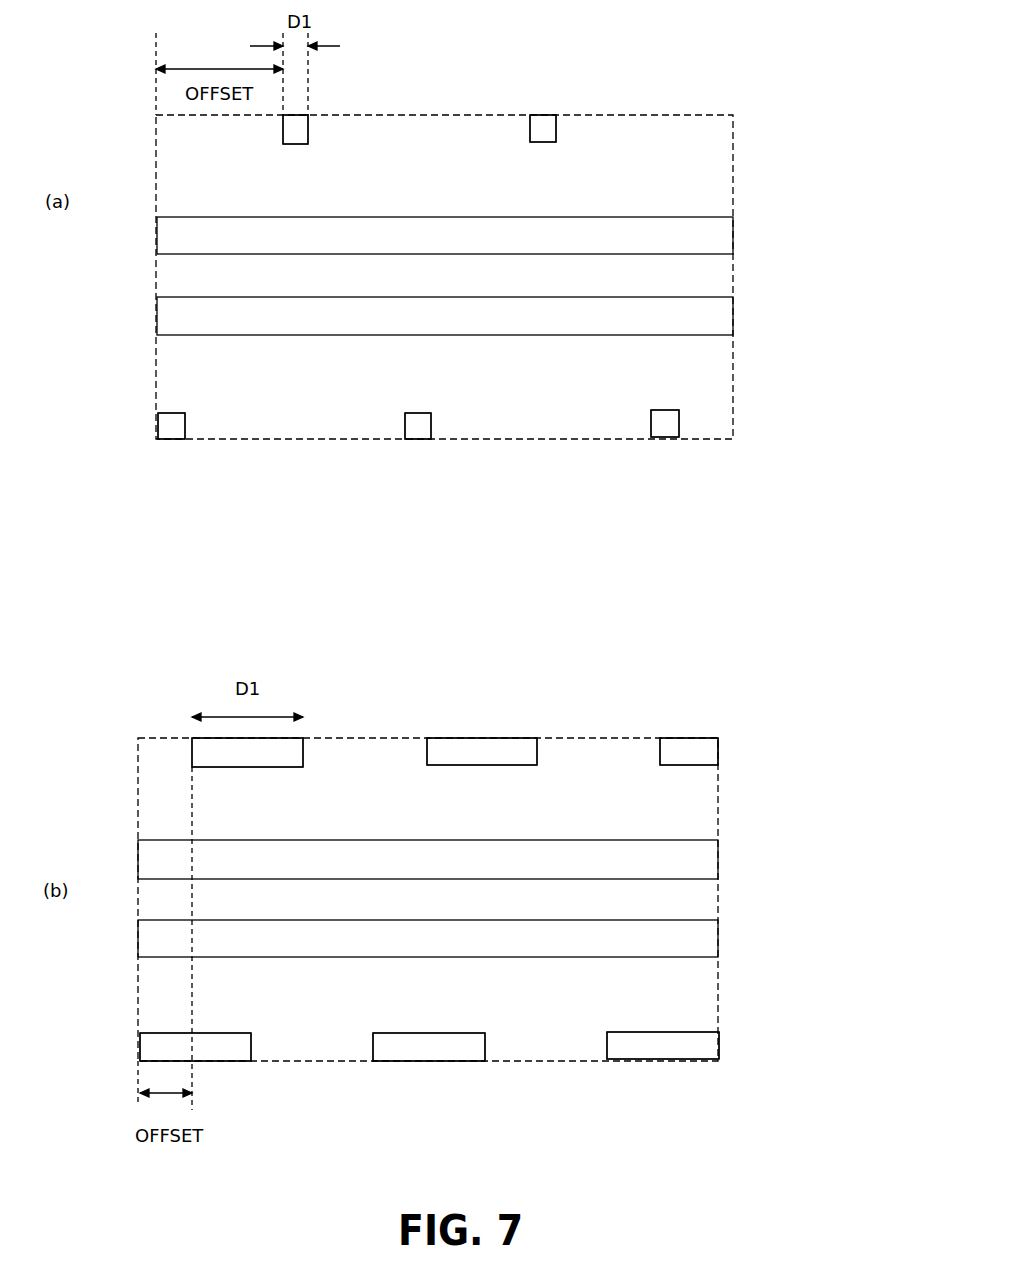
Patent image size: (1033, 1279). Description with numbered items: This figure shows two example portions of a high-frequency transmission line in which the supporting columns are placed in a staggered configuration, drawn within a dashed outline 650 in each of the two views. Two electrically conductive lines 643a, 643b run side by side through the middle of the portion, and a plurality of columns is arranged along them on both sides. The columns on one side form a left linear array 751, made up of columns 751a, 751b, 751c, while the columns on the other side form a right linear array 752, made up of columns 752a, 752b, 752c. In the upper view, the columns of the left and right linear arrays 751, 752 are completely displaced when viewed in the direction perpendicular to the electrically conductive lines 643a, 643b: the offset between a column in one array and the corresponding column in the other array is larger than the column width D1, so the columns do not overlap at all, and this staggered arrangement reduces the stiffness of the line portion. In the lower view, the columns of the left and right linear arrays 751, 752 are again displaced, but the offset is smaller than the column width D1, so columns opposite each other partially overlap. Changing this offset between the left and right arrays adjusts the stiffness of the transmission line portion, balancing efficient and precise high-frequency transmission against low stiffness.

The pressure-sensitive sensor / detection region 650 is at (733, 187).
The electrically conductive line 643a is at (735, 240).
The electrically conductive line 643b is at (735, 320).
The left linear array 751 is at (442, 109).
The column 751a is at (308, 135).
The column 751b is at (556, 125).
The column 751c is at (685, 765).
The right linear array 752 is at (426, 457).
The column 752a is at (172, 413).
The column 752b is at (420, 413).
The column 752c is at (668, 410).